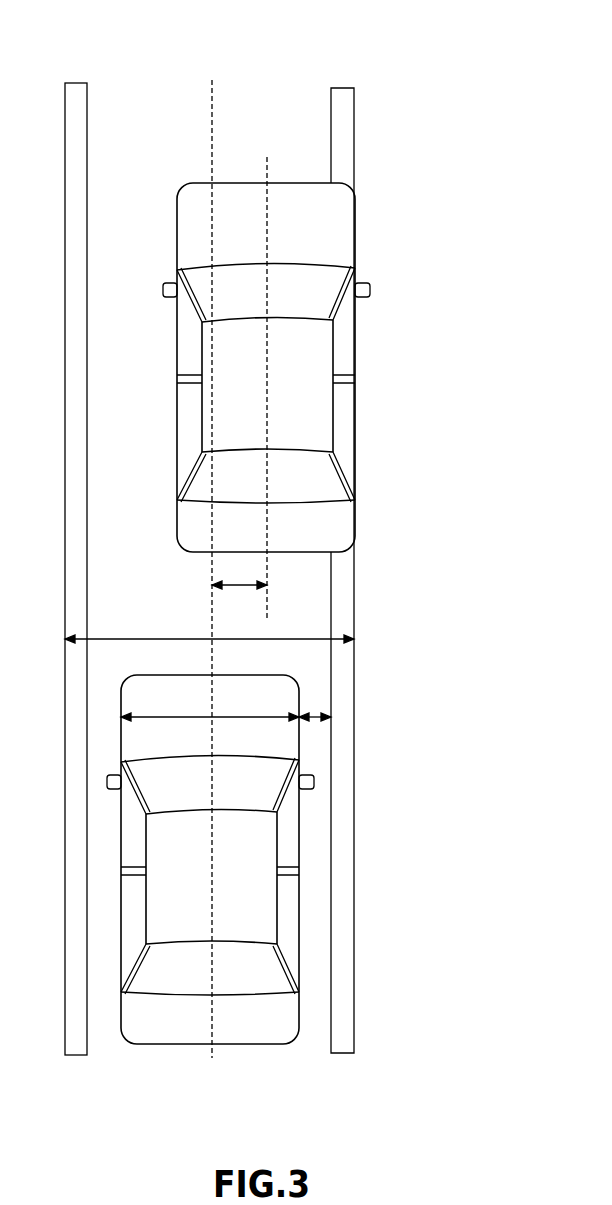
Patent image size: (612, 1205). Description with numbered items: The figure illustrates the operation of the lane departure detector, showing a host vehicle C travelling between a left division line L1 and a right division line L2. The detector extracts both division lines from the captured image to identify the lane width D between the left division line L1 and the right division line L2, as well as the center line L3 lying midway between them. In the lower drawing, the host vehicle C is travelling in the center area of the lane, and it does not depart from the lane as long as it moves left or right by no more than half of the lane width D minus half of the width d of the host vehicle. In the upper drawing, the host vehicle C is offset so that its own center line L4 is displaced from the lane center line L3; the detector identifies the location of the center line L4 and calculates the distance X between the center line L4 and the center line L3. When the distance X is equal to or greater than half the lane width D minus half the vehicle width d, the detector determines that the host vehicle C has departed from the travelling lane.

The left division line L1 is at (76, 90).
The right division line L2 is at (346, 94).
The center line between the left division line and the right division line L3 is at (212, 105).
The center line of the host vehicle L4 is at (267, 160).
The host vehicle C is at (340, 230).
The distance between the center line of the host vehicle and the lane center line X is at (237, 583).
The lane width D is at (209, 627).
The width of the host vehicle d is at (210, 706).